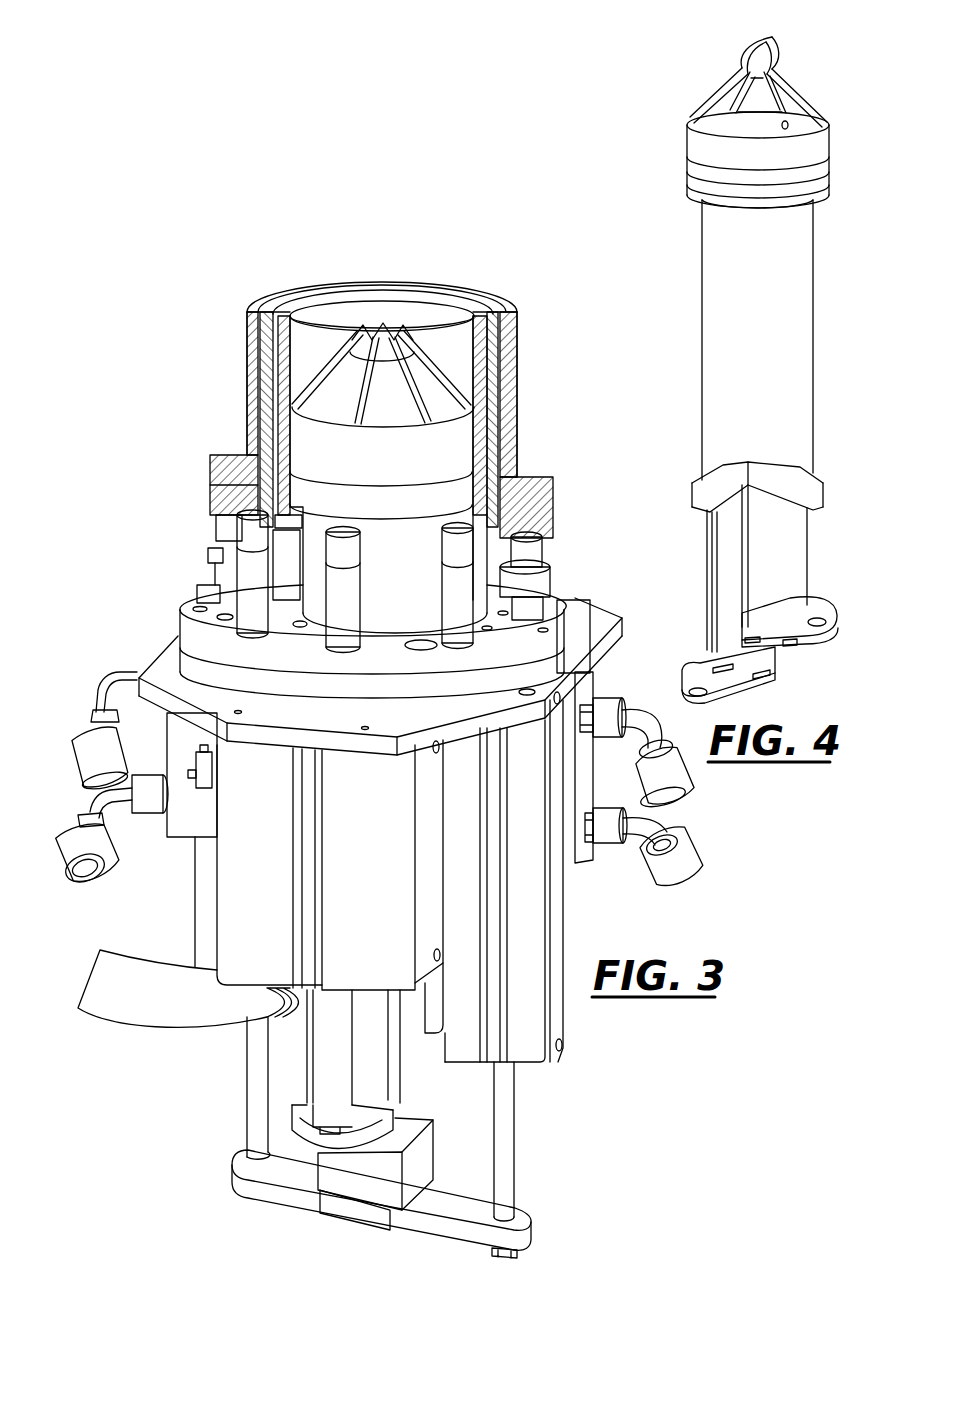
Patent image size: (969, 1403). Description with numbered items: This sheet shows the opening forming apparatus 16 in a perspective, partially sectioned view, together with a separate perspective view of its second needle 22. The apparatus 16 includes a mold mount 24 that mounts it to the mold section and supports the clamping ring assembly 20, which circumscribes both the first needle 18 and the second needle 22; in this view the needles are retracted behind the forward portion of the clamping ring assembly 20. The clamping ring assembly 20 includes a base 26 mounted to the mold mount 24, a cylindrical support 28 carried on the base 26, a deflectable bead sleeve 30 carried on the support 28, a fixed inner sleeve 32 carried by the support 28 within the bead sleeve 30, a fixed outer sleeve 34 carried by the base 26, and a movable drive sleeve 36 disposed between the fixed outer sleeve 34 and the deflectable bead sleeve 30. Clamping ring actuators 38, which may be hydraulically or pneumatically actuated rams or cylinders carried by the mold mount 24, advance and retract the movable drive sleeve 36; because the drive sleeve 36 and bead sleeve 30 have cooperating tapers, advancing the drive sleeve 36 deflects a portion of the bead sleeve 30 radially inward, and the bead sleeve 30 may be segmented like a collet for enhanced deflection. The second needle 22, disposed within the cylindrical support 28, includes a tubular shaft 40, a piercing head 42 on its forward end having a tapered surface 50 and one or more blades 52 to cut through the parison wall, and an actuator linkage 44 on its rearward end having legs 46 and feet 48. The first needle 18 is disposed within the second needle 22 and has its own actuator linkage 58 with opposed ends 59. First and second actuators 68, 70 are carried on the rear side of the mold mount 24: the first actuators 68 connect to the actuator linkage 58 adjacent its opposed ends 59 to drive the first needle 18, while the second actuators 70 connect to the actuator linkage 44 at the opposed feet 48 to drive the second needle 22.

In FIG. 3, the opening forming apparatus 16 is at (126, 516).
In FIG. 3, the first needle 18 is at (380, 323).
In FIG. 3, the clamping ring assembly 20 is at (256, 293).
In FIG. 3, the second needle 22 is at (440, 345).
In FIG. 4, the second needle 22 is at (690, 85).
In FIG. 3, the mold mount 24 is at (162, 655).
In FIG. 3, the base 26 is at (183, 606).
In FIG. 3, the cylindrical support 28 is at (280, 573).
In FIG. 3, the deflectable bead sleeve 30 is at (278, 445).
In FIG. 3, the fixed inner sleeve 32 is at (282, 392).
In FIG. 3, the fixed outer sleeve 34 is at (255, 360).
In FIG. 3, the movable drive sleeve 36 is at (263, 337).
In FIG. 3, the clamping ring actuators 38 is at (141, 848).
In FIG. 4, the tubular shaft 40 is at (797, 354).
In FIG. 4, the piercing head 42 is at (830, 130).
In FIG. 3, the actuator linkage 44 is at (295, 1096).
In FIG. 4, the actuator linkage 44 is at (682, 492).
In FIG. 4, the legs 46 is at (743, 563).
In FIG. 3, the feet 48 is at (307, 1142).
In FIG. 4, the feet 48 is at (810, 637).
In FIG. 4, the tapered surface 50 is at (793, 104).
In FIG. 4, the blades 52 is at (772, 50).
In FIG. 3, the actuator linkage 58 is at (420, 1227).
In FIG. 3, the opposed ends 59 is at (520, 1243).
In FIG. 3, the first actuators 68 is at (203, 900).
In FIG. 3, the second actuators 70 is at (384, 931).